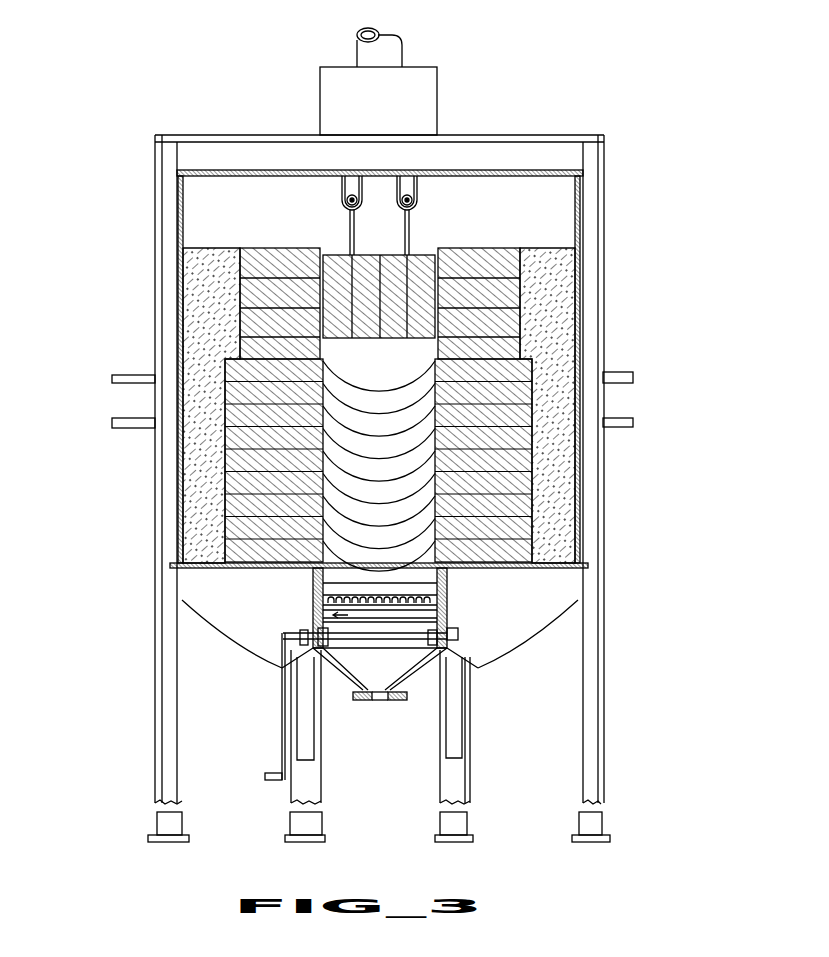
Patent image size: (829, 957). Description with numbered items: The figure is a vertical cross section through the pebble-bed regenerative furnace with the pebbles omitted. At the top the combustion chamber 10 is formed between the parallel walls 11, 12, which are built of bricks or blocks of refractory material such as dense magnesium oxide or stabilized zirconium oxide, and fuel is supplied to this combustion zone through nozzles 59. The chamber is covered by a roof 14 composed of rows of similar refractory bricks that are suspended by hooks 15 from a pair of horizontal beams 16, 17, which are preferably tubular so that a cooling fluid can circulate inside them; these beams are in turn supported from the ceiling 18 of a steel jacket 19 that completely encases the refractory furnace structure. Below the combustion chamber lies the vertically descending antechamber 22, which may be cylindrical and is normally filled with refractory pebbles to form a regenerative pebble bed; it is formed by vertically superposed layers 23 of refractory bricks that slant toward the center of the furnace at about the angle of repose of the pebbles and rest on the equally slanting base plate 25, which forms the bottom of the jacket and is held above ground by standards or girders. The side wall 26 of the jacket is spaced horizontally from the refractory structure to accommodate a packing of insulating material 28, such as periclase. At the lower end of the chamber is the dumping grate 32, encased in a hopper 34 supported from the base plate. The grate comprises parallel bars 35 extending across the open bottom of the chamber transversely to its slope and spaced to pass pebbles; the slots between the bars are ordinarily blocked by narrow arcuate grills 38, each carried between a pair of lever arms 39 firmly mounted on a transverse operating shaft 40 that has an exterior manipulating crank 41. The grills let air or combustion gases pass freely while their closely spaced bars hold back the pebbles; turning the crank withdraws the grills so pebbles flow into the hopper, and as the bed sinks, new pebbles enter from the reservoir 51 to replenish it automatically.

The combustion chamber 10 is at (391, 372).
The wall 11 is at (497, 252).
The wall 12 is at (275, 252).
The roof 14 is at (418, 258).
The hooks 15 is at (405, 226).
The horizontal beam 16 is at (343, 200).
The horizontal beam 17 is at (417, 200).
The ceiling 18 is at (255, 170).
The steel jacket 19 is at (578, 221).
The antechamber 22 is at (393, 479).
The layers of refractory bricks 23 is at (283, 560).
The base plate 25 is at (588, 572).
The side wall 26 is at (182, 320).
The insulating material 28 is at (567, 325).
The dumping grate 32 is at (312, 614).
The hopper 34 is at (410, 673).
The parallel bars 35 is at (385, 587).
The arcuate grill 38 is at (410, 597).
The lever arms 39 is at (300, 627).
The operating shaft 40 is at (405, 636).
The manipulating crank 41 is at (282, 725).
The reservoir 51 is at (387, 104).
The nozzles 59 is at (112, 380).